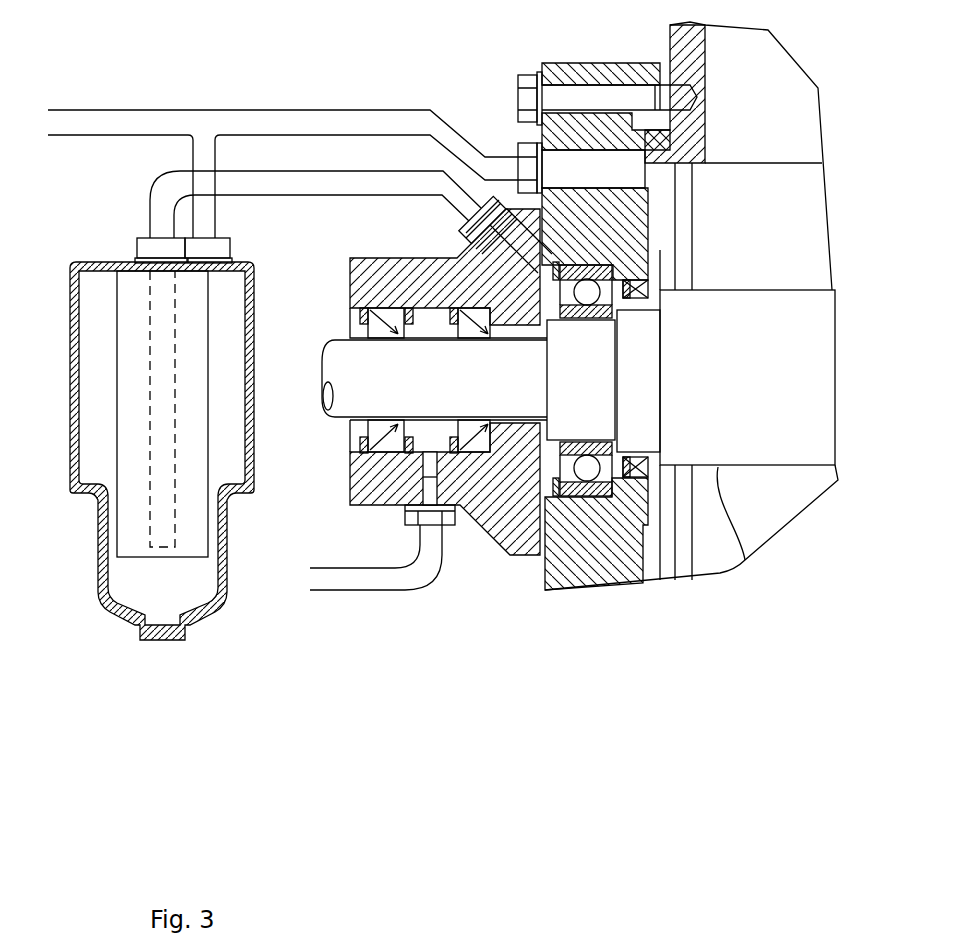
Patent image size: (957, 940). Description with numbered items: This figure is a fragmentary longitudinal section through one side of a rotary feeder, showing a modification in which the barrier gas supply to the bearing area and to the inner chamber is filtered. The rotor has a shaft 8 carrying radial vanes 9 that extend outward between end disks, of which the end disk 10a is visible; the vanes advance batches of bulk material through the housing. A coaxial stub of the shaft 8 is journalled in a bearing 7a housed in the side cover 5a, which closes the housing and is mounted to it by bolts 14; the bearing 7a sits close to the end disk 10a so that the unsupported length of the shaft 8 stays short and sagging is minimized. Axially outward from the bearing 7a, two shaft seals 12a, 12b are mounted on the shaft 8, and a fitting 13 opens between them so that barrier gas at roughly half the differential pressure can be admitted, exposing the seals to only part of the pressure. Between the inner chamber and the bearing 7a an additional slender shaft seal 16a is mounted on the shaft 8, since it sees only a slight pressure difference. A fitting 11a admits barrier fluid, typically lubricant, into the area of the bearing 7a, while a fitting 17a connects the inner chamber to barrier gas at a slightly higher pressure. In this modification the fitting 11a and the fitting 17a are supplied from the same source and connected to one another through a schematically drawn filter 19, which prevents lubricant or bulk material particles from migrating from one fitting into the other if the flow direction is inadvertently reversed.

The side cover 5a is at (620, 572).
The bearing 7a is at (563, 497).
The shaft 8 is at (745, 560).
The radial vanes 9 is at (770, 545).
The end disk 10a is at (683, 557).
The fitting 11a is at (480, 213).
The shaft seal 12a is at (378, 346).
The shaft seal 12b is at (468, 346).
The fitting 13 is at (428, 527).
The bolts 14 is at (527, 80).
The additional shaft seal 16a is at (661, 300).
The fitting 17a is at (528, 170).
The filter 19 is at (158, 640).